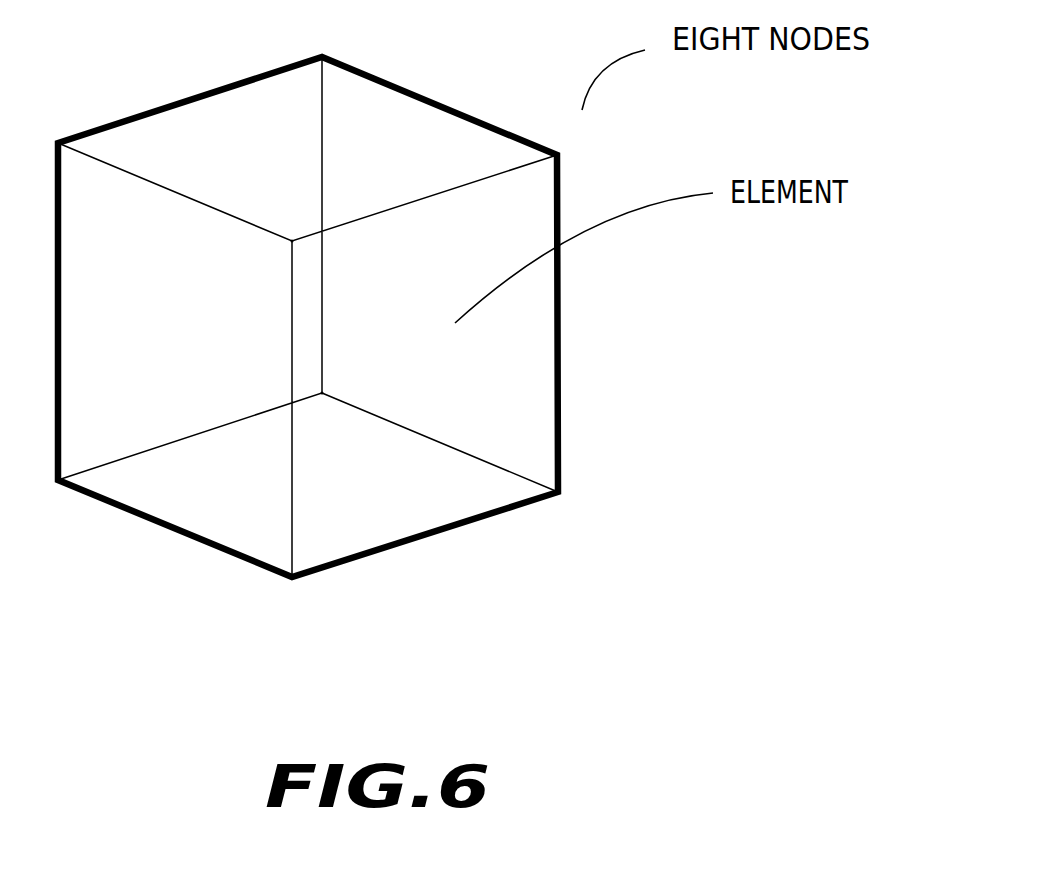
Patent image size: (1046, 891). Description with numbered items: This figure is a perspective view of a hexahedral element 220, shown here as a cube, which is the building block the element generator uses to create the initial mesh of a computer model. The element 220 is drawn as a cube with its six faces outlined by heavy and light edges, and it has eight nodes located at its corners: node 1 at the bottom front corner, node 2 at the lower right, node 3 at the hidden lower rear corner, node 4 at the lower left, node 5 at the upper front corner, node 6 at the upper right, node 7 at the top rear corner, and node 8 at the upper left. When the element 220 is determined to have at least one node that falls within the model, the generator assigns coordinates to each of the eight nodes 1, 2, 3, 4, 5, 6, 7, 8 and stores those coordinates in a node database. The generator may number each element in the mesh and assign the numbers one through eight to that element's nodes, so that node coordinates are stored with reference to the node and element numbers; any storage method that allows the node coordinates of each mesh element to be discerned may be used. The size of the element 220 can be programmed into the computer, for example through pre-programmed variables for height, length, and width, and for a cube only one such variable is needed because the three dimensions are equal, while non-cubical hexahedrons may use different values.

The hexahedral element 220 is at (622, 311).
The node 1 is at (284, 601).
The node 2 is at (569, 506).
The node 3 is at (325, 422).
The node 4 is at (43, 488).
The node 5 is at (282, 219).
The node 6 is at (562, 133).
The node 7 is at (327, 35).
The node 8 is at (43, 137).